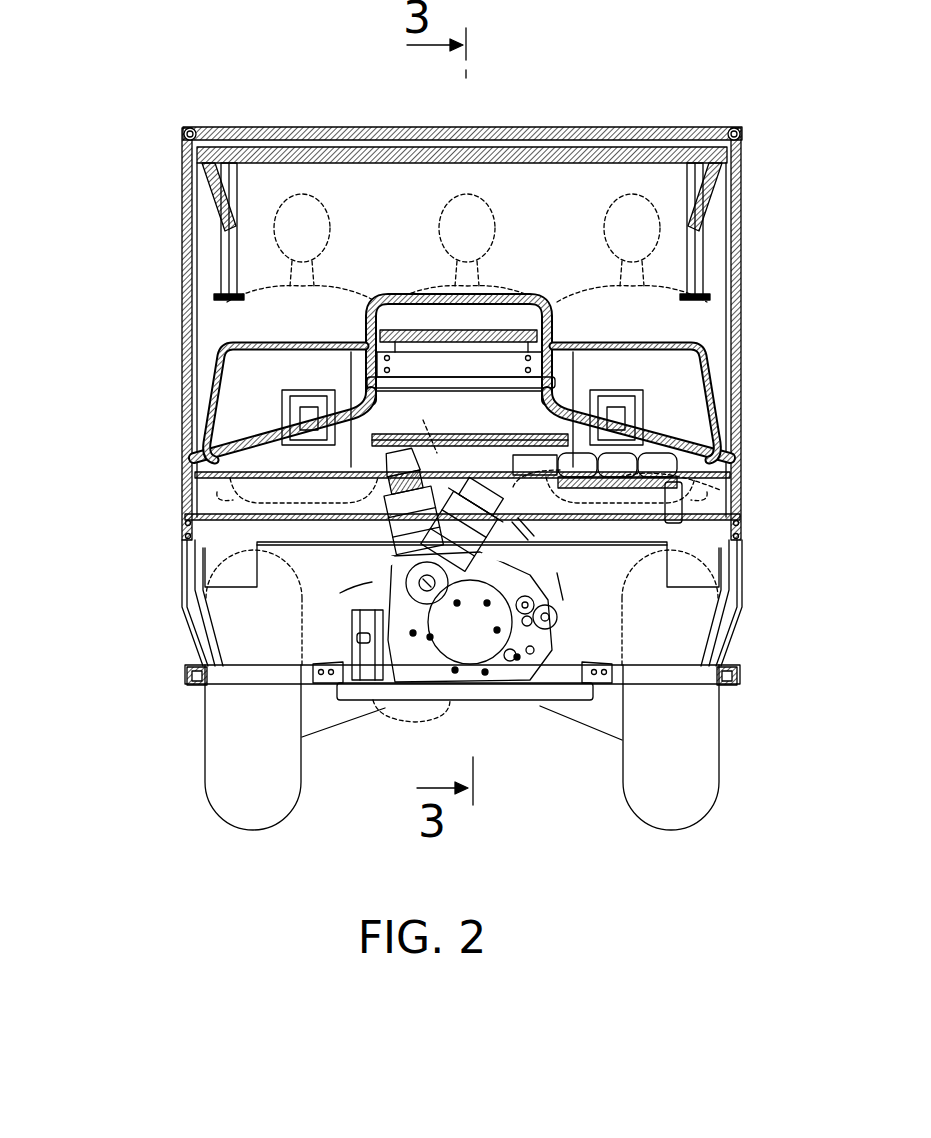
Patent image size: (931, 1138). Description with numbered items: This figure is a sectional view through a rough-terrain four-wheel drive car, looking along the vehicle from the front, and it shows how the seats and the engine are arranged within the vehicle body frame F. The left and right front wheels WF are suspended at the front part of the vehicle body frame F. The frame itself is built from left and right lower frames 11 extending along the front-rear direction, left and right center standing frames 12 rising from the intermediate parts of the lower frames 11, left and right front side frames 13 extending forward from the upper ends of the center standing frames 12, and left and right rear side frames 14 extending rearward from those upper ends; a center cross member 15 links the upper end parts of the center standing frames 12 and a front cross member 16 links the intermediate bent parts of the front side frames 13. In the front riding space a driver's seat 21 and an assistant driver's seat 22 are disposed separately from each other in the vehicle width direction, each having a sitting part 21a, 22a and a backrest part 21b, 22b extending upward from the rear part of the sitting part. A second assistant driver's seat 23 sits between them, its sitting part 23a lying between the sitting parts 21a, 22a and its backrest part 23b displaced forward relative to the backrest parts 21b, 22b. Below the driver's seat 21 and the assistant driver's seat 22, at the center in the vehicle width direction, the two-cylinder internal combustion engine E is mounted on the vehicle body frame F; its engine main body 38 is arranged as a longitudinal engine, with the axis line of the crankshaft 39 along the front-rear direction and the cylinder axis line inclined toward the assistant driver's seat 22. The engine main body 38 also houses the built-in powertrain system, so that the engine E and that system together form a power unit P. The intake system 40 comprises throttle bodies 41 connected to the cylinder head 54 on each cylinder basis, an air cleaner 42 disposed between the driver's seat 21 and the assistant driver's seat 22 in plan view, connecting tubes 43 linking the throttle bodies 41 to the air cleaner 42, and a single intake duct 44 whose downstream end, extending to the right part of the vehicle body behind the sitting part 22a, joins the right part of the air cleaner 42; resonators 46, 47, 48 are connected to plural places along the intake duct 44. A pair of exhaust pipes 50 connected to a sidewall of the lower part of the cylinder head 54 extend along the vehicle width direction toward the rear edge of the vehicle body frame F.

The lower frame 11 is at (730, 678).
The center standing frame 12 is at (192, 283).
The front side frame 13 is at (237, 195).
The rear side frame 14 is at (183, 133).
The center cross member 15 is at (481, 137).
The front cross member 16 is at (405, 155).
The driver's seat 21 is at (245, 401).
The sitting part 21a is at (210, 503).
The backrest part 21b is at (293, 365).
The assistant driver's seat 22 is at (667, 364).
The sitting part 22a is at (730, 490).
The backrest part 22b is at (665, 292).
The second assistant driver's seat 23 is at (461, 345).
The sitting part 23a is at (500, 460).
The backrest part 23b is at (427, 327).
The engine main body 38 is at (350, 588).
The crankshaft 39 is at (421, 712).
The intake system 40 is at (597, 520).
The throttle body 41 is at (397, 517).
The air cleaner 42 is at (555, 398).
The connecting tube 43 is at (378, 458).
The intake duct 44 is at (738, 528).
The resonator 46 is at (575, 455).
The resonator 47 is at (620, 455).
The resonator 48 is at (728, 428).
The exhaust pipe 50 is at (562, 578).
The cylinder head 54 is at (510, 527).
The internal combustion engine E is at (435, 581).
The vehicle body frame F is at (747, 597).
The power unit P is at (435, 581).
The front wheel WF is at (225, 788).